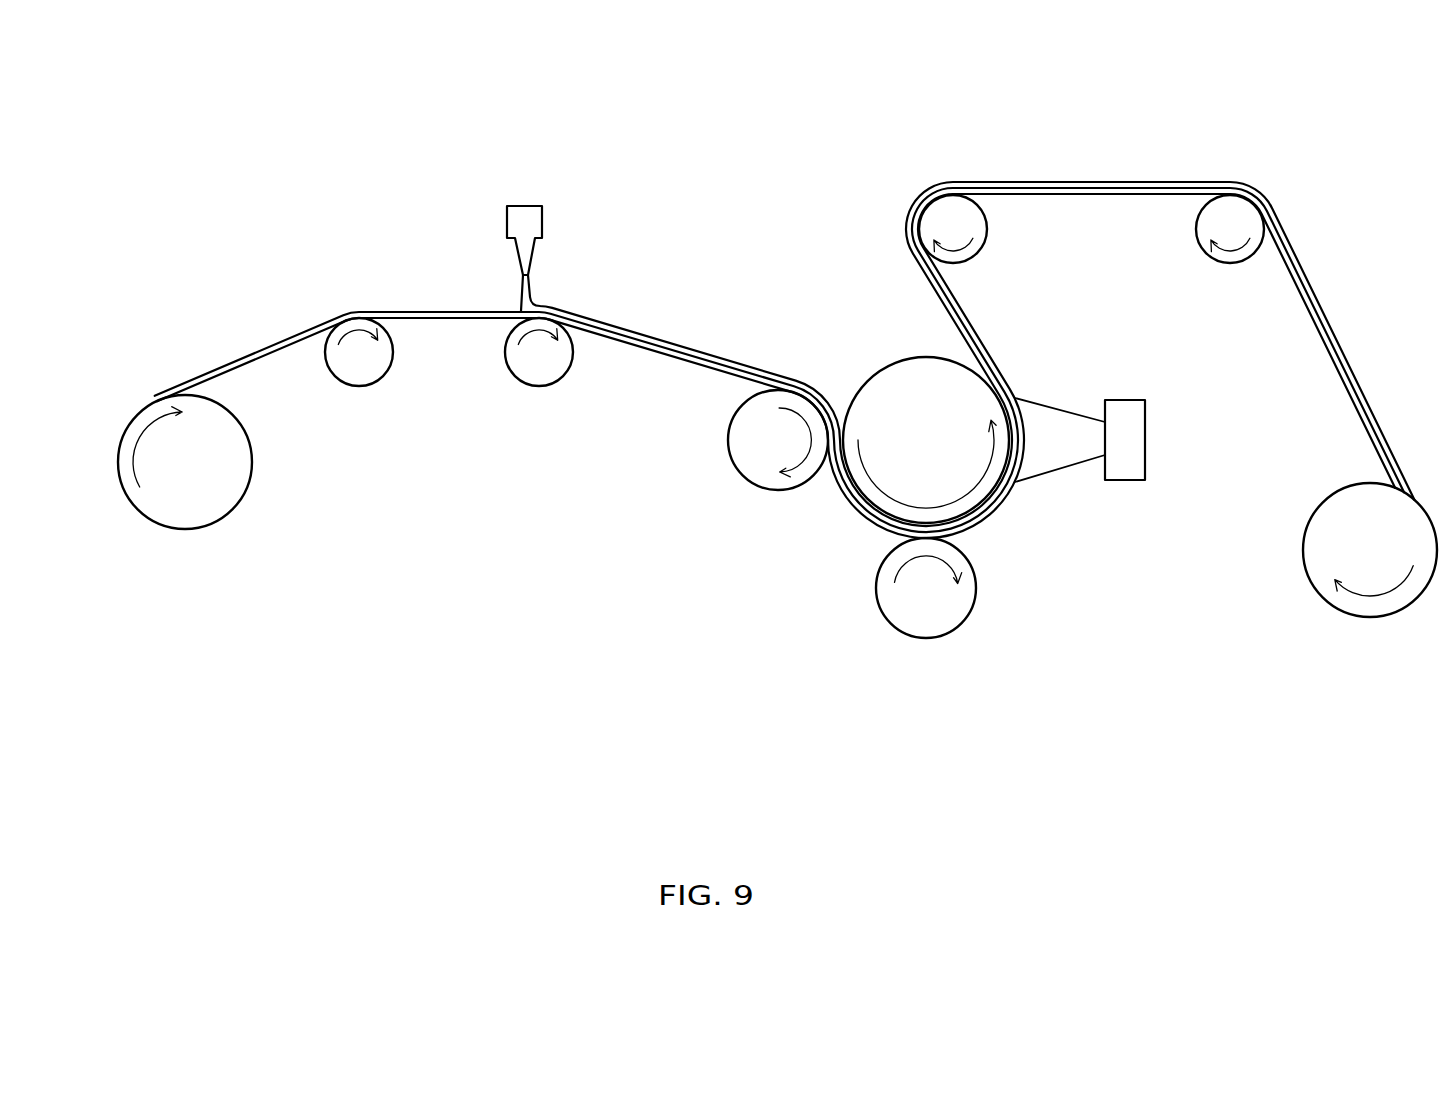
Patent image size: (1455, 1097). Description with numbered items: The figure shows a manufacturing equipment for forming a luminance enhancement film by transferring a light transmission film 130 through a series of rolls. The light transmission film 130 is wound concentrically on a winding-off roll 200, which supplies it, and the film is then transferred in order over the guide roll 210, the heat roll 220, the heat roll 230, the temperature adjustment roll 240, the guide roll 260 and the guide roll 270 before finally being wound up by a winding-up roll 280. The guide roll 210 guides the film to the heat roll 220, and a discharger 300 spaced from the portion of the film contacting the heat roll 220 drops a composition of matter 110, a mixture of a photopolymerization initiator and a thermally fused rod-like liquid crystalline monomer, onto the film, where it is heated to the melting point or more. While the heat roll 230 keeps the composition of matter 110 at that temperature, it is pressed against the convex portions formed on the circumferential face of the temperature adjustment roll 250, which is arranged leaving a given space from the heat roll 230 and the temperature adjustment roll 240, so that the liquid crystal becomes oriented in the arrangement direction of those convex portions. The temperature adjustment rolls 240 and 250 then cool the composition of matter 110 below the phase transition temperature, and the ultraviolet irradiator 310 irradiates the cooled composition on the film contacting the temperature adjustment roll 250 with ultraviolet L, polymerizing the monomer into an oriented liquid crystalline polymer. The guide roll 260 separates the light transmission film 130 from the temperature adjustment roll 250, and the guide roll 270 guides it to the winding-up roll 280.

The composition of matter 110 is at (527, 297).
The light transmission film 130 is at (248, 358).
The winding-off roll 200 is at (183, 520).
The guide roll 210 is at (358, 375).
The heat roll 220 is at (538, 375).
The heat roll 230 is at (776, 483).
The temperature adjustment roll 240 is at (927, 625).
The temperature adjustment roll 250 is at (882, 380).
The guide roll 260 is at (950, 207).
The guide roll 270 is at (1230, 207).
The winding-up roll 280 is at (1367, 614).
The discharger 300 is at (523, 215).
The ultraviolet irradiator 310 is at (1125, 470).
The ultraviolet L is at (1060, 410).